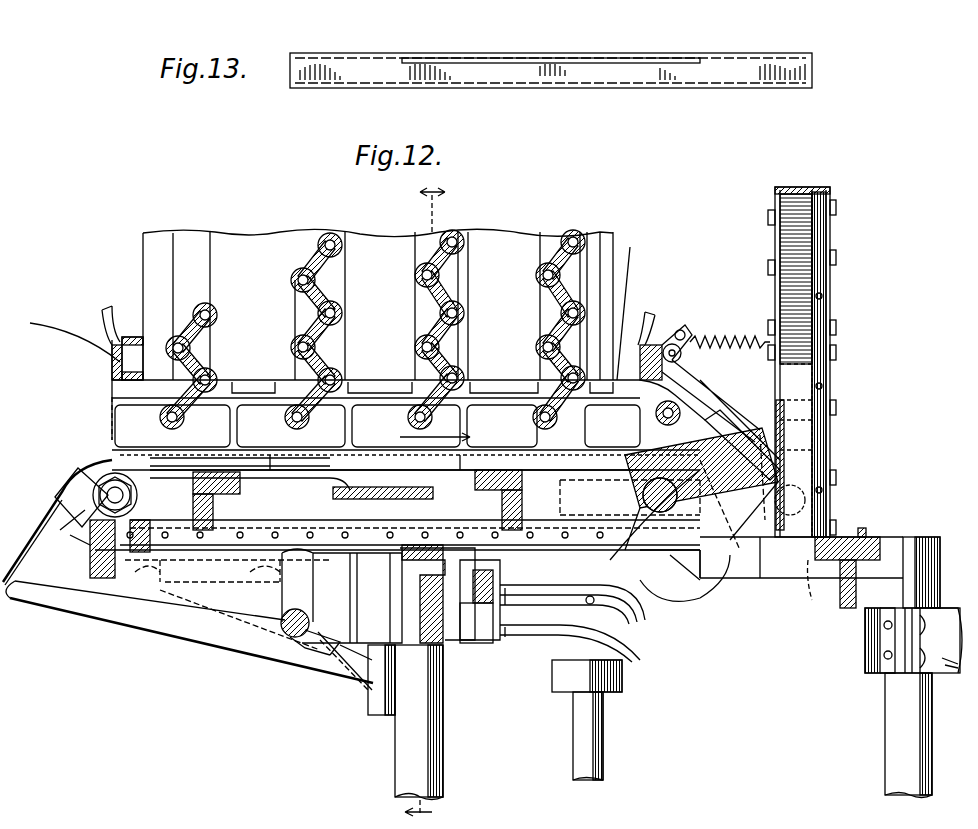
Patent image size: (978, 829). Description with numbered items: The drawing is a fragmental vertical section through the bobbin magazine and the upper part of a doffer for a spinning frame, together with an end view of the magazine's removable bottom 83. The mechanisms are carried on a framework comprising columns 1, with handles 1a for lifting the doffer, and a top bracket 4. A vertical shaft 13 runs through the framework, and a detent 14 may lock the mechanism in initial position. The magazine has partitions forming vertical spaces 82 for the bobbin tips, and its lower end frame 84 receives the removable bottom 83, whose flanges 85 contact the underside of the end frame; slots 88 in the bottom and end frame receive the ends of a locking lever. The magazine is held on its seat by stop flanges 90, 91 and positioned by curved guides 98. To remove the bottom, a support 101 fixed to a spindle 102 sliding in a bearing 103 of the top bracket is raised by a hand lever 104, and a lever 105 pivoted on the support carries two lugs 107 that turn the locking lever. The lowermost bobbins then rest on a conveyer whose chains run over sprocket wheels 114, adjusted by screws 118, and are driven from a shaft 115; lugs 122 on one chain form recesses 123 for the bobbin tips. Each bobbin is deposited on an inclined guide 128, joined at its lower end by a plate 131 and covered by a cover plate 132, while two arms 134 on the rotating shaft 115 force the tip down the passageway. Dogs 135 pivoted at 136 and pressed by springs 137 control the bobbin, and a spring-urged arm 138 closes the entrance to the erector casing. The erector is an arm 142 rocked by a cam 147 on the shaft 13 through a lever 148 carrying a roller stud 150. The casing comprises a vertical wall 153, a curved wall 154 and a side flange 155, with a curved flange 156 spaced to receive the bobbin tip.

In FIG. 12, the column 1 is at (400, 768).
In FIG. 12, the handle 1a is at (958, 675).
In FIG. 12, the top bracket 4 is at (165, 598).
In FIG. 12, the vertical shaft 13 is at (585, 752).
In FIG. 12, the detent 14 is at (416, 495).
In FIG. 12, the vertical spaces 82 is at (188, 245).
In FIG. 12, the removable bottom 83 is at (350, 455).
In FIG. 12, the lower end frame 84 is at (130, 337).
In FIG. 13, the flanges 85 is at (714, 88).
In FIG. 12, the flanges 85 is at (120, 440).
In FIG. 13, the slots 88 is at (588, 66).
In FIG. 12, the slots 88 is at (64, 332).
In FIG. 12, the stop flange 90 is at (115, 362).
In FIG. 12, the stop flange 91 is at (678, 345).
In FIG. 12, the curved guides 98 is at (104, 312).
In FIG. 12, the support 101 is at (322, 483).
In FIG. 12, the spindle 102 is at (378, 712).
In FIG. 12, the bearing 103 is at (350, 660).
In FIG. 12, the hand lever 104 is at (262, 625).
In FIG. 12, the lever 105 is at (58, 503).
In FIG. 12, the lugs 107 is at (202, 458).
In FIG. 12, the sprocket wheels 114 is at (139, 525).
In FIG. 12, the shaft 115 is at (690, 566).
In FIG. 12, the screws 118 is at (62, 487).
In FIG. 12, the lugs 122 is at (70, 468).
In FIG. 12, the recesses 123 is at (470, 455).
In FIG. 12, the inclined guide 128 is at (725, 412).
In FIG. 12, the plate or bar 131 is at (775, 545).
In FIG. 12, the cover plate 132 is at (700, 408).
In FIG. 12, the arms 134 is at (620, 385).
In FIG. 12, the dogs 135 is at (715, 355).
In FIG. 12, the pivot 136 is at (692, 340).
In FIG. 12, the springs 137 is at (730, 333).
In FIG. 12, the arm 138 is at (694, 494).
In FIG. 12, the erector arm 142 is at (815, 548).
In FIG. 12, the cam 147 is at (660, 655).
In FIG. 12, the lever 148 is at (482, 615).
In FIG. 12, the roller stud 150 is at (505, 620).
In FIG. 12, the vertical wall 153 is at (832, 362).
In FIG. 12, the curved wall 154 is at (800, 186).
In FIG. 12, the side flange 155 is at (775, 192).
In FIG. 12, the curved flange 156 is at (828, 245).